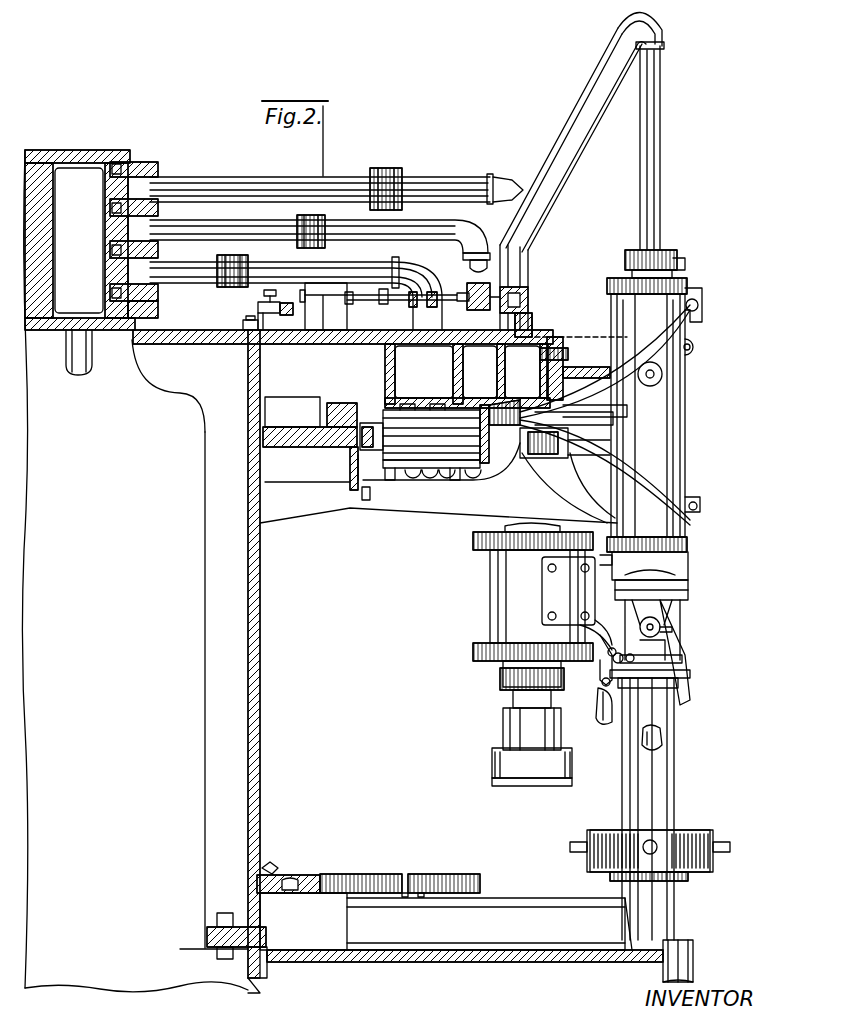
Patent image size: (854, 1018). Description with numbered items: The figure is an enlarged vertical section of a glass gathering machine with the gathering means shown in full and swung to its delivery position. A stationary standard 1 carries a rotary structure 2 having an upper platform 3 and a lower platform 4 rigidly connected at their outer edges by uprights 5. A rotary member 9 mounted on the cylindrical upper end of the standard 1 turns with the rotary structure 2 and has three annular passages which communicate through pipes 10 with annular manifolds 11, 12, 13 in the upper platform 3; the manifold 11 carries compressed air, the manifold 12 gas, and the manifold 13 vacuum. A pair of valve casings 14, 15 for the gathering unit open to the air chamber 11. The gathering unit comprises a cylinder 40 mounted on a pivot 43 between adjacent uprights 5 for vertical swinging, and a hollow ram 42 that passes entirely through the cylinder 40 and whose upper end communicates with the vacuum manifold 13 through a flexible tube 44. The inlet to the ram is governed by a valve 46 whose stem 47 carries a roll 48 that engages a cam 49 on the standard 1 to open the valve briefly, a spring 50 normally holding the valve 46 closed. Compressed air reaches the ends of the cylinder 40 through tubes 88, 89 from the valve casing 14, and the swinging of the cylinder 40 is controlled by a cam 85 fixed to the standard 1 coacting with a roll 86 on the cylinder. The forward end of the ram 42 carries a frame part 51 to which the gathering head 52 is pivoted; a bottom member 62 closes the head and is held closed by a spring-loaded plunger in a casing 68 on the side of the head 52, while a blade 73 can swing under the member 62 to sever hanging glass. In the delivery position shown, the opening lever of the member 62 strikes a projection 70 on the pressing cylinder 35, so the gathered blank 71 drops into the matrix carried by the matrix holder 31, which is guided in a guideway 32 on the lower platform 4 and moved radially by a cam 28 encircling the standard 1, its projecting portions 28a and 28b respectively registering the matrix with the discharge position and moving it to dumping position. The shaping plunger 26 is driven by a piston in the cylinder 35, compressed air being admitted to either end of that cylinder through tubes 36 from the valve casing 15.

The standard 1 is at (253, 622).
The rotary structure 2 is at (262, 380).
The upper platform part 3 is at (570, 348).
The lower platform part 4 is at (530, 962).
The posts or uprights 5 is at (662, 797).
The rotary member 9 is at (155, 176).
The pipes 10 is at (195, 270).
The compressed air chamber or manifold 11 is at (467, 376).
The gas chamber or manifold 12 is at (484, 371).
The vacuum chamber or manifold 13 is at (526, 371).
The valve casing 14 is at (385, 410).
The valve casing 15 is at (405, 465).
The shaping plunger 26 is at (510, 762).
The cam 28 is at (306, 870).
The projecting portion of cam 28a is at (413, 872).
The outwardly projecting portion of cam 28b is at (468, 872).
The matrix holder 31 is at (700, 865).
The guideway 32 is at (445, 942).
The cylinder 35 is at (503, 588).
The tubes 36 is at (460, 478).
The cylinder 40 is at (668, 437).
The ram 42 is at (652, 183).
The pivot 43 is at (655, 377).
The flexible tube 44 is at (586, 97).
The valve 46 is at (525, 300).
The stem 47 is at (362, 292).
The roll 48 is at (287, 315).
The cam 49 is at (258, 306).
The spring 50 is at (535, 303).
The casing or frame-part 51 is at (680, 590).
The gathering head 52 is at (658, 643).
The bottom member 62 is at (600, 718).
The casing 68 is at (665, 660).
The projection 70 is at (603, 665).
The gathered blank 71 is at (660, 740).
The blade 73 is at (690, 690).
The cam 85 is at (565, 492).
The roll 86 is at (555, 460).
The tube 88 is at (660, 487).
The tube 89 is at (660, 352).